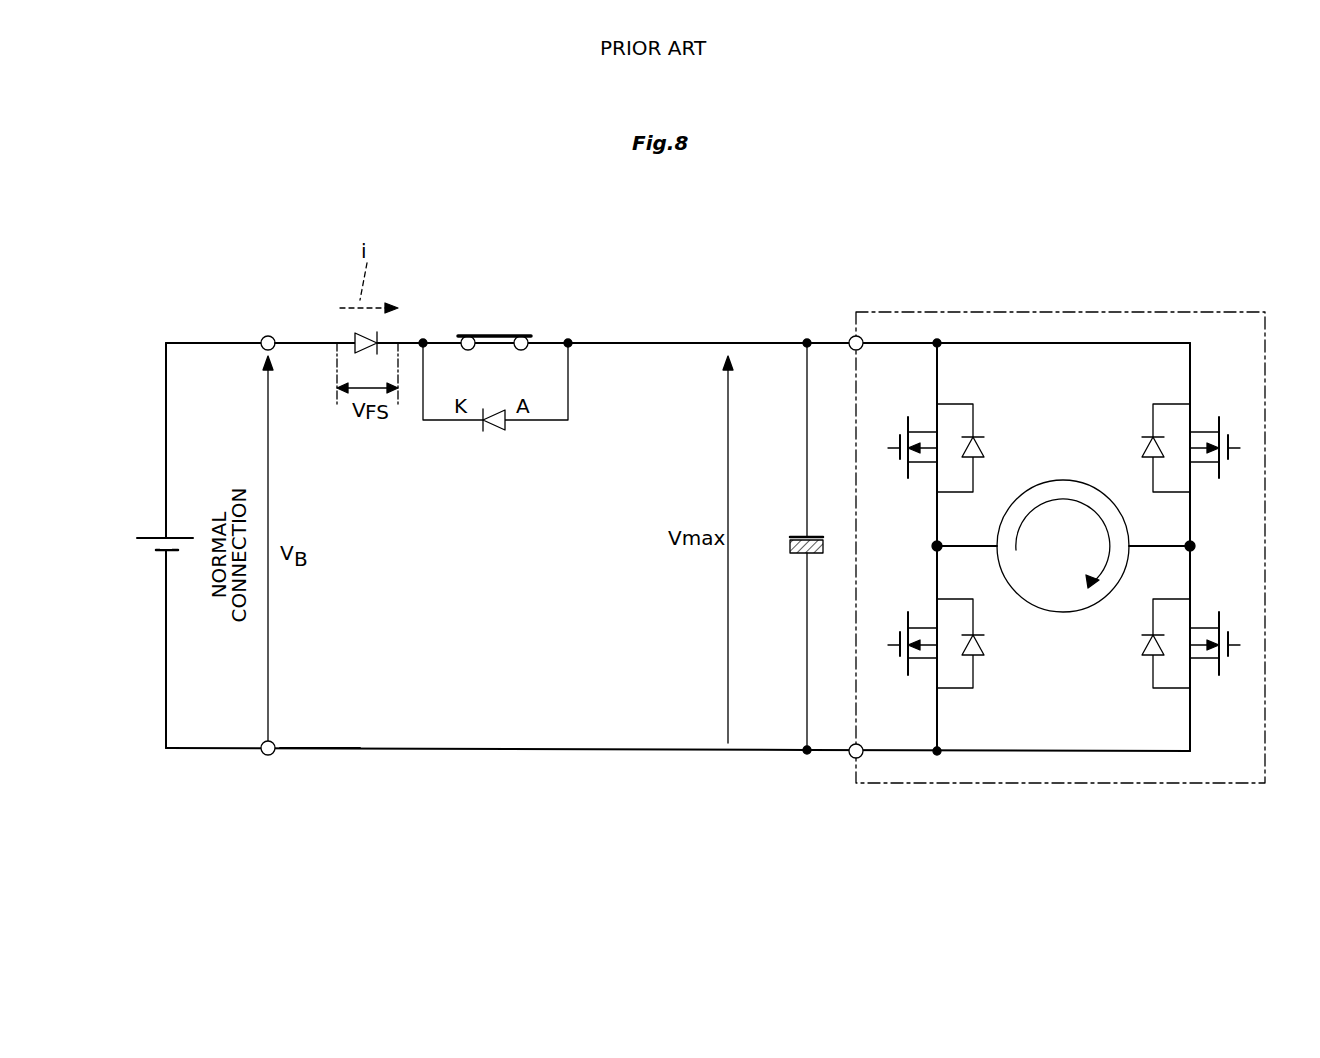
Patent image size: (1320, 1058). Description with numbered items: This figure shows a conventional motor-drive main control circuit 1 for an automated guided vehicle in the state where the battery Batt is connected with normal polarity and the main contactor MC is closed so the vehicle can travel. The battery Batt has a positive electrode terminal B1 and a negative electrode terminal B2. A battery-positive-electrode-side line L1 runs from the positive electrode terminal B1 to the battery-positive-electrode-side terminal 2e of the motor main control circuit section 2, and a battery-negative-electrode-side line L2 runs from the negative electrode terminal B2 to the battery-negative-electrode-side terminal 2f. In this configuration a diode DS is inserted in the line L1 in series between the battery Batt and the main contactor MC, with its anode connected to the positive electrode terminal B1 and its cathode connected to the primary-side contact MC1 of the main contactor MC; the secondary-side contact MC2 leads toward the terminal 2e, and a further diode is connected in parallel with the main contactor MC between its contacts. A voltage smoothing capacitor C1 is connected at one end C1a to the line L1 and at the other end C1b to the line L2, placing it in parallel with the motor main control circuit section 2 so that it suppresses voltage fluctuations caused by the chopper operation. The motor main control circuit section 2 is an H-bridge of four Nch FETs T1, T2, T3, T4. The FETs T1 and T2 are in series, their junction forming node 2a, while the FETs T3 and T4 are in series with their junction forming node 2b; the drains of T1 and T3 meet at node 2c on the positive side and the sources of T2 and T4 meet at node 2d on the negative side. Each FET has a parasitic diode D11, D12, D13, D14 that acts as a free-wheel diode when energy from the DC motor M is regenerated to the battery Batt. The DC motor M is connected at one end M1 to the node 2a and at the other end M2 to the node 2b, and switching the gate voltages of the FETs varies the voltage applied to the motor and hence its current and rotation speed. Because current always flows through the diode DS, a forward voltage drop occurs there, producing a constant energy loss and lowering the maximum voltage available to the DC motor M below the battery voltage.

The motor-drive main control circuit 1 is at (1088, 250).
The motor main control circuit section 2 is at (1110, 312).
The node 2a is at (934, 547).
The node 2b is at (1192, 548).
The node 2c is at (938, 340).
The node 2d is at (937, 758).
The battery-positive-electrode-side terminal 2e is at (854, 337).
The battery-negative-electrode-side terminal 2f is at (856, 758).
The positive electrode terminal B1 is at (266, 336).
The negative electrode terminal B2 is at (268, 756).
The battery-positive-electrode-side line L1 is at (287, 340).
The battery-negative-electrode-side line L2 is at (326, 752).
The battery Batt is at (160, 536).
The diode DS is at (355, 335).
The main contactor MC is at (500, 307).
The primary-side contact MC1 is at (460, 337).
The secondary-side contact MC2 is at (530, 338).
The voltage smoothing capacitor C1 is at (797, 537).
The one end of voltage smoothing capacitor C1a is at (804, 340).
The other end of voltage smoothing capacitor C1b is at (806, 750).
The Nch FET T1 is at (904, 420).
The Nch FET T2 is at (904, 615).
The Nch FET T3 is at (1221, 420).
The Nch FET T4 is at (1221, 615).
The parasitic diode D11 is at (984, 447).
The parasitic diode D12 is at (984, 645).
The parasitic diode D13 is at (1142, 447).
The parasitic diode D14 is at (1142, 648).
The DC motor M is at (1047, 480).
The one end of DC motor M1 is at (935, 544).
The other end of DC motor M2 is at (1192, 544).